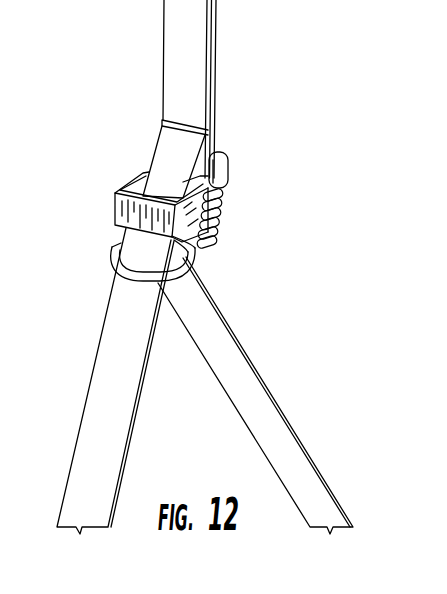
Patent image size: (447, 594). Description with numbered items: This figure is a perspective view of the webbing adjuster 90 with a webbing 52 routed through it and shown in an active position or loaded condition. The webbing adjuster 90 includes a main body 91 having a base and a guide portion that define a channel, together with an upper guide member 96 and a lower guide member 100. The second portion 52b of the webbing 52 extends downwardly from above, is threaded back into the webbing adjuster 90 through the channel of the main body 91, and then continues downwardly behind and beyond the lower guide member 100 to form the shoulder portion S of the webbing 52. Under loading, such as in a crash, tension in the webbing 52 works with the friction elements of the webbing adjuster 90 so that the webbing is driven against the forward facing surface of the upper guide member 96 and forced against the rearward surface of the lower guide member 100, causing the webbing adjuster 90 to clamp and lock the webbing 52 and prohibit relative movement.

The second portion 52b is at (176, 78).
The webbing adjuster 90 is at (77, 197).
The upper guide member 96 is at (222, 158).
The main body 91 is at (228, 227).
The lower guide member 100 is at (110, 267).
The webbing 52 is at (243, 387).
The shoulder portion S is at (97, 418).